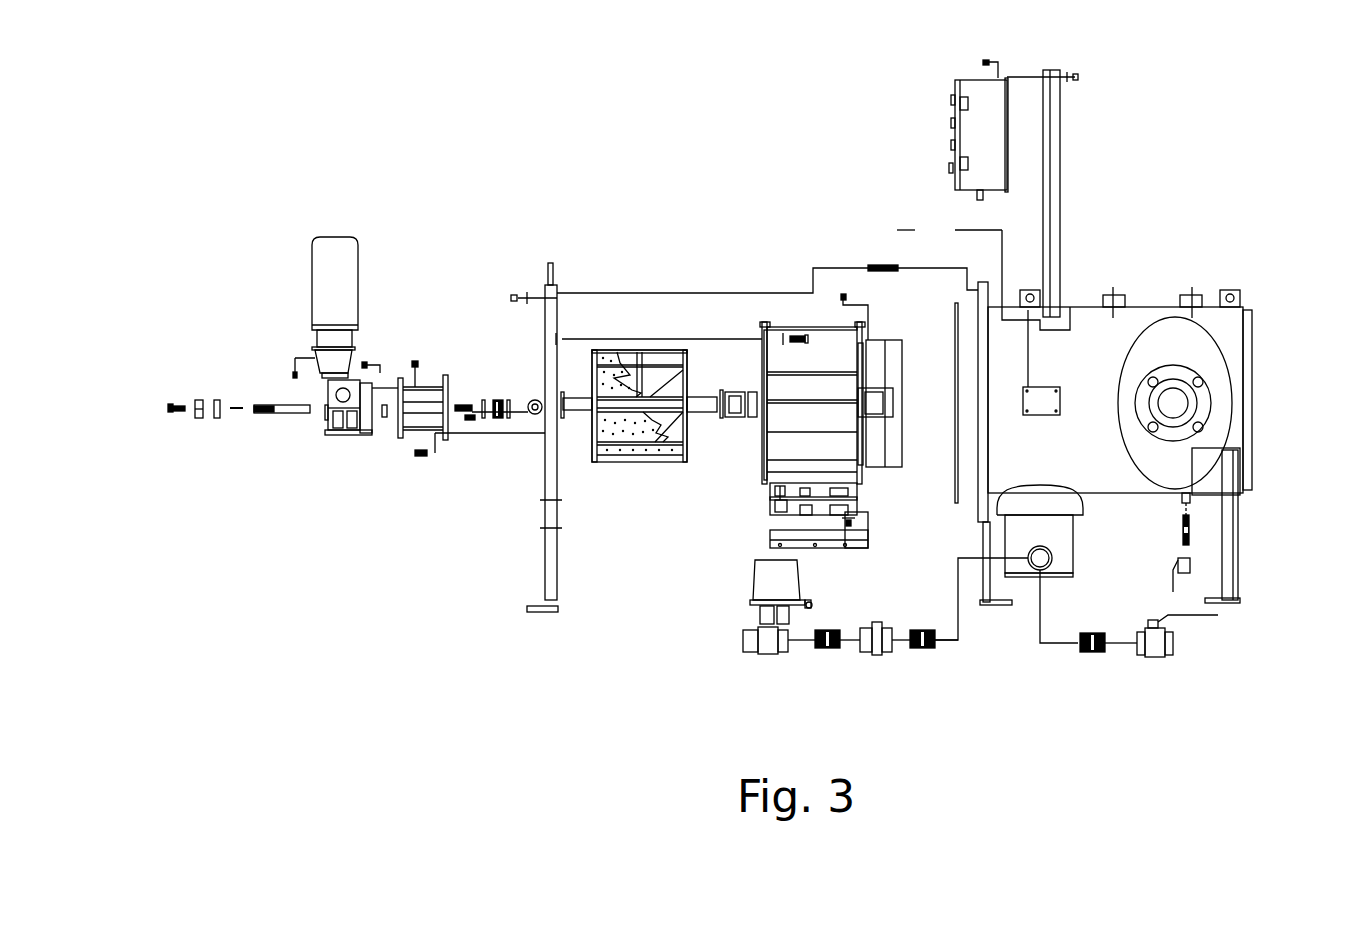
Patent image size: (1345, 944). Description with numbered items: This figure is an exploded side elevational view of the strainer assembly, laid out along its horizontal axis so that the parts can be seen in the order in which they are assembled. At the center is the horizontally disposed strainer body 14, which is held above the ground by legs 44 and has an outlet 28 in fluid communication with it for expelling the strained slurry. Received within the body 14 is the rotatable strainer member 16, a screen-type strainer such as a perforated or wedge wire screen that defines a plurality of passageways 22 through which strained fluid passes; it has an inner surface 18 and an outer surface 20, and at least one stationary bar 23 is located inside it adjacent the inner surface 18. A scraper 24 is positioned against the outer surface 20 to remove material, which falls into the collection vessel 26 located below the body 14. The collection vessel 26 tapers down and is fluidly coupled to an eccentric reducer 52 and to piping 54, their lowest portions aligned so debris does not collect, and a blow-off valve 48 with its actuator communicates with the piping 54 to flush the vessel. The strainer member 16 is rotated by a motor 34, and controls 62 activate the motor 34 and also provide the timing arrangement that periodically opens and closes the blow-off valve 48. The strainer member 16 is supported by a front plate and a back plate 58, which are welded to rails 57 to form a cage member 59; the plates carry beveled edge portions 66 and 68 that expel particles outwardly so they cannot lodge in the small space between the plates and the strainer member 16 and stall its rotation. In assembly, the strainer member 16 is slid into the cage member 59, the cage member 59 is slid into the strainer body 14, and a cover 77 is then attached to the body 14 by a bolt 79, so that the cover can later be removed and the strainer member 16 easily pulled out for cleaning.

The strainer body 14 is at (1088, 360).
The strainer member 16 is at (645, 463).
The inner surface 18 is at (592, 377).
The outer surface 20 is at (607, 352).
The passageways 22 is at (613, 428).
The stationary bar 23 is at (665, 367).
The scraper 24 is at (770, 532).
The collection vessel 26 is at (1030, 572).
The outlet 28 is at (1173, 400).
The motor 34 is at (337, 273).
The legs 44 is at (553, 552).
The blow-off valve 48 is at (773, 578).
The eccentric reducer 52 is at (876, 656).
The piping 54 is at (770, 642).
The rails 57 is at (815, 323).
The back plate 58 is at (762, 360).
The cage member 59 is at (829, 293).
The controls 62 is at (985, 88).
The beveled edge portion 66 is at (870, 345).
The beveled edge portion 68 is at (763, 368).
The cover 77 is at (462, 420).
The bolt 79 is at (798, 333).